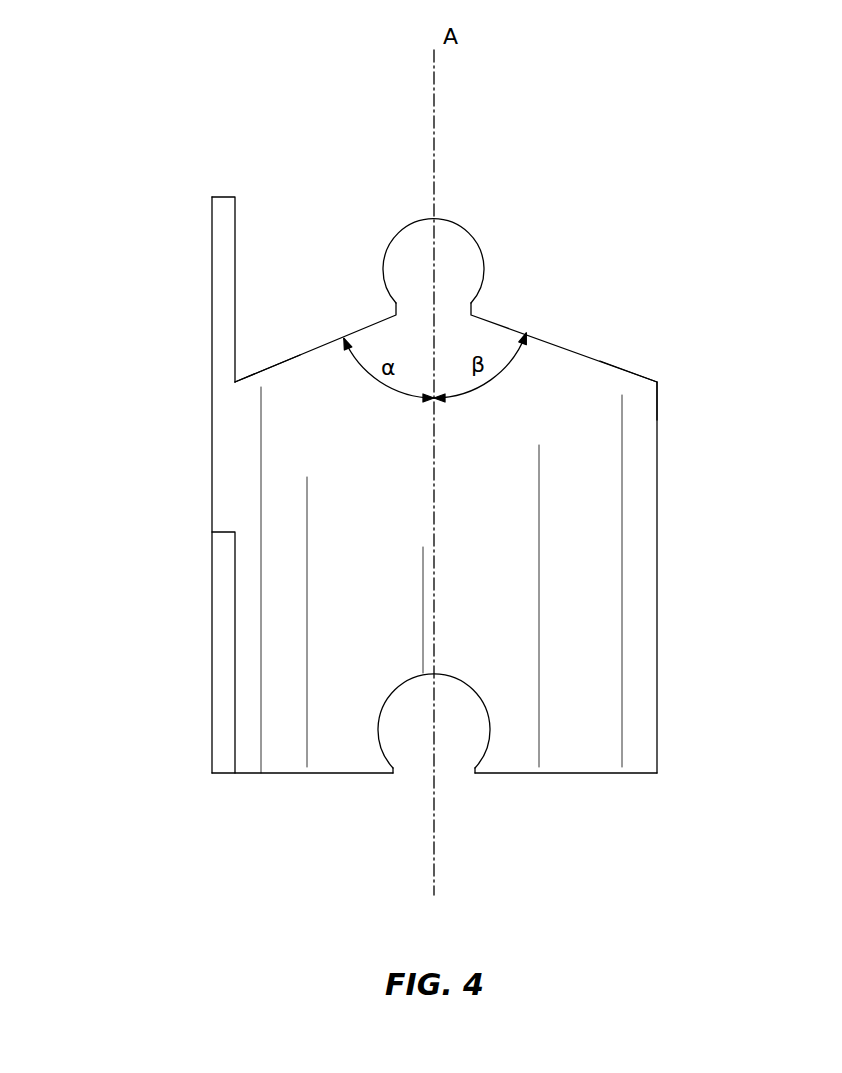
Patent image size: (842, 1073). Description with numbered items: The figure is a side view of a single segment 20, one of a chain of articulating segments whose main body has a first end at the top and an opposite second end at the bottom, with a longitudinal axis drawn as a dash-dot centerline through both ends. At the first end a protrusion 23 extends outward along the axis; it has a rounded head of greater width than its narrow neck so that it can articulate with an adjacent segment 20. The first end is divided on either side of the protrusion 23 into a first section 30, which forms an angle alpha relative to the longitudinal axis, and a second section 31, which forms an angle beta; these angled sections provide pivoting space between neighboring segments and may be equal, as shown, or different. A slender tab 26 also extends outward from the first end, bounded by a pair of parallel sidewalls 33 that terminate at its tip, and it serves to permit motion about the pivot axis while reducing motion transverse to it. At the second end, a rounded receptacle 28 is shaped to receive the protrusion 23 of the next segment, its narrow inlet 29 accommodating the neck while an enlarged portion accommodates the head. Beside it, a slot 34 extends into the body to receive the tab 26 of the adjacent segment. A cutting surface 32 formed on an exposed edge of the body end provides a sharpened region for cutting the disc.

The segment 20 is at (602, 561).
The protrusion 23 is at (453, 241).
The tab 26 is at (212, 253).
The receptacle 28 is at (453, 732).
The narrow inlet 29 is at (446, 772).
The first section 30 is at (326, 347).
The second section 31 is at (572, 348).
The cutting surface 32 is at (620, 368).
The parallel sidewalls 33 is at (283, 367).
The slot 34 is at (220, 652).